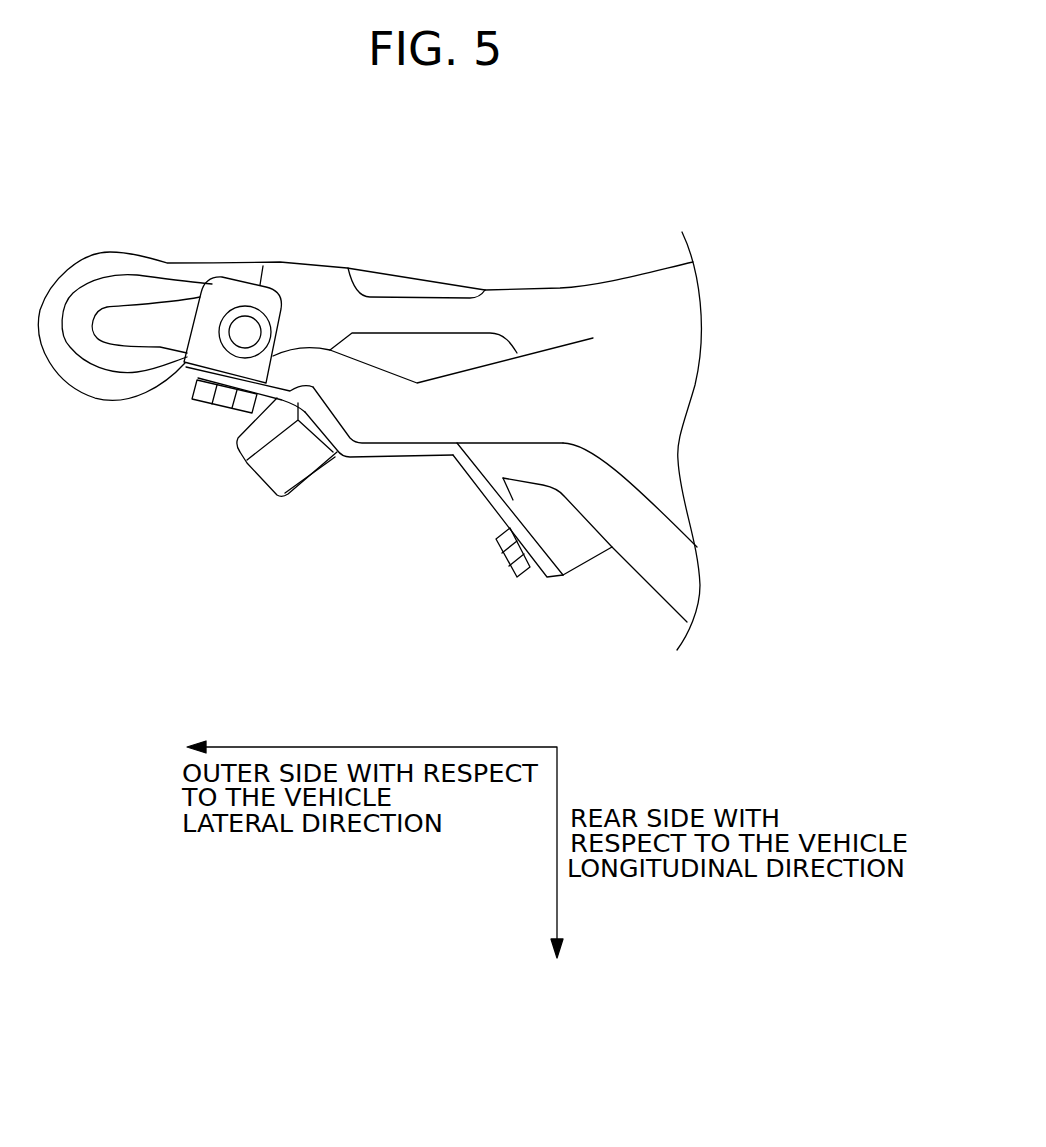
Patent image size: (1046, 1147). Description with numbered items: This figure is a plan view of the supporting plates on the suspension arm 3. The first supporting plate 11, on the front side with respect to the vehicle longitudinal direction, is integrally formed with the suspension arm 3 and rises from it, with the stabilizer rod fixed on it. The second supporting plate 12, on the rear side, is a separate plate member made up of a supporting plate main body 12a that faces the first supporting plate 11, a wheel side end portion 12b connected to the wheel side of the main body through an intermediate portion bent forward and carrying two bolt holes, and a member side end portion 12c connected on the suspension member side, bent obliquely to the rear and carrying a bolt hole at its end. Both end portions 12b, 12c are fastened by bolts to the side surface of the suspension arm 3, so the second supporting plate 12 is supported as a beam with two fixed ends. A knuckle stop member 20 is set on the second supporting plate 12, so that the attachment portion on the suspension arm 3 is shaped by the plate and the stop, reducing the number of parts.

The suspension arm 3 is at (635, 390).
The first supporting plate 11 is at (425, 318).
The second supporting plate 12 is at (374, 526).
The supporting plate main body 12a is at (400, 452).
The wheel side end portion 12b is at (217, 420).
The member side end portion 12c is at (505, 506).
The knuckle stop member 20 is at (267, 473).